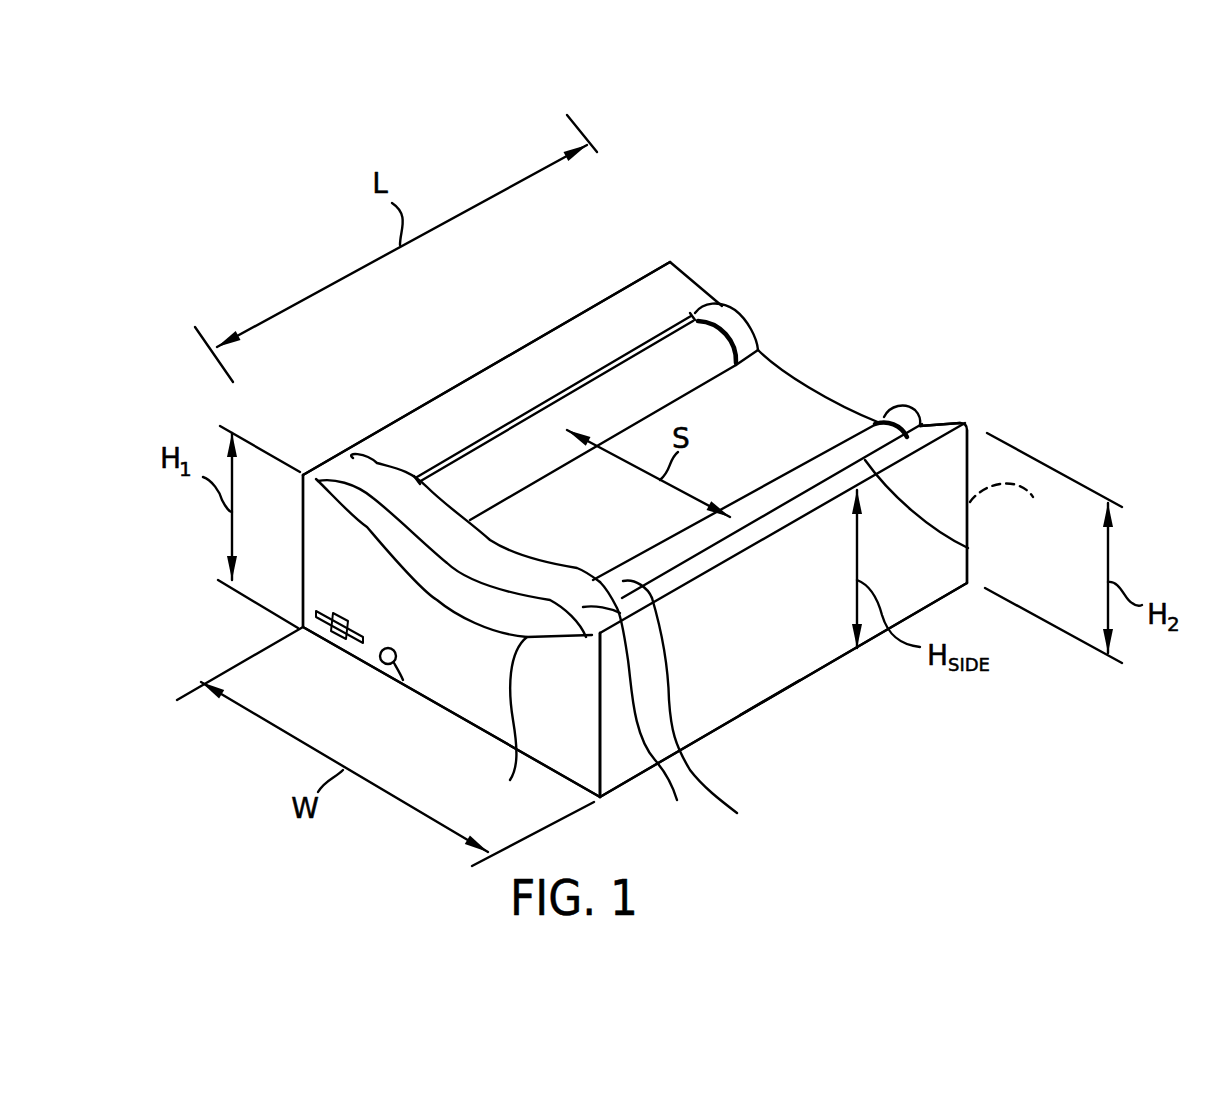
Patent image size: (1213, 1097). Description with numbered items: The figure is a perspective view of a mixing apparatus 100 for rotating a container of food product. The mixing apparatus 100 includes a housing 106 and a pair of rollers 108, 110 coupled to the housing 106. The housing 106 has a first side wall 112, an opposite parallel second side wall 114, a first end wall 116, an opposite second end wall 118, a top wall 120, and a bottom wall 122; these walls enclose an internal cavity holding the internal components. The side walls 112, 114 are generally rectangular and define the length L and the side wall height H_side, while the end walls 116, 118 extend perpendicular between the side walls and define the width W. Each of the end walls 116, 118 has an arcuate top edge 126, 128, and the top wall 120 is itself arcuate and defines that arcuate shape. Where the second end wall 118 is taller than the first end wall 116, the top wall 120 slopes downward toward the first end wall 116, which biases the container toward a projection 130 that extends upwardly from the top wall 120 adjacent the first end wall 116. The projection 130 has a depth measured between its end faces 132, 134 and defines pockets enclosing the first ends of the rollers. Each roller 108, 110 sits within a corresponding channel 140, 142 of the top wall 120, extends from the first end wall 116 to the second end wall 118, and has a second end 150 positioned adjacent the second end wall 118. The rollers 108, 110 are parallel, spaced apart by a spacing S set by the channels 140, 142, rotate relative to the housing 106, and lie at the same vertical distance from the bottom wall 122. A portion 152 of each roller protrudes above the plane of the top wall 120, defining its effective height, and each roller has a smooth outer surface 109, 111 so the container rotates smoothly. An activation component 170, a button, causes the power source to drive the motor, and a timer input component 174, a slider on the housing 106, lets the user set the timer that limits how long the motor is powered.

The mixing apparatus 100 is at (320, 190).
The housing 106 is at (713, 733).
The roller 108 is at (913, 403).
The outer surface 109 is at (702, 716).
The roller 110 is at (748, 320).
The outer surface 111 is at (680, 348).
The first side wall 112 is at (767, 617).
The second side wall 114 is at (398, 413).
The first end wall 116 is at (468, 693).
The second end wall 118 is at (1020, 509).
The top wall 120 is at (790, 392).
The bottom wall 122 is at (778, 698).
The top edge 126 is at (502, 729).
The top edge 128 is at (842, 407).
The projection 130 is at (641, 711).
The end face 132 is at (418, 555).
The end face 134 is at (503, 546).
The channel 140 is at (968, 548).
The channel 142 is at (688, 318).
The second end 150 is at (735, 312).
The portion 152 is at (782, 480).
The activation component 170 is at (403, 680).
The timer input component 174 is at (332, 640).